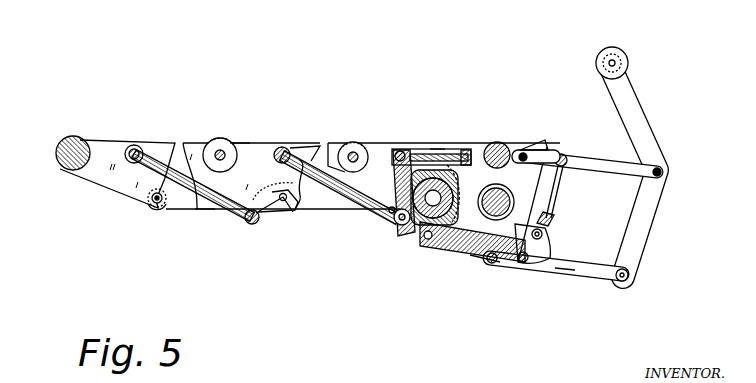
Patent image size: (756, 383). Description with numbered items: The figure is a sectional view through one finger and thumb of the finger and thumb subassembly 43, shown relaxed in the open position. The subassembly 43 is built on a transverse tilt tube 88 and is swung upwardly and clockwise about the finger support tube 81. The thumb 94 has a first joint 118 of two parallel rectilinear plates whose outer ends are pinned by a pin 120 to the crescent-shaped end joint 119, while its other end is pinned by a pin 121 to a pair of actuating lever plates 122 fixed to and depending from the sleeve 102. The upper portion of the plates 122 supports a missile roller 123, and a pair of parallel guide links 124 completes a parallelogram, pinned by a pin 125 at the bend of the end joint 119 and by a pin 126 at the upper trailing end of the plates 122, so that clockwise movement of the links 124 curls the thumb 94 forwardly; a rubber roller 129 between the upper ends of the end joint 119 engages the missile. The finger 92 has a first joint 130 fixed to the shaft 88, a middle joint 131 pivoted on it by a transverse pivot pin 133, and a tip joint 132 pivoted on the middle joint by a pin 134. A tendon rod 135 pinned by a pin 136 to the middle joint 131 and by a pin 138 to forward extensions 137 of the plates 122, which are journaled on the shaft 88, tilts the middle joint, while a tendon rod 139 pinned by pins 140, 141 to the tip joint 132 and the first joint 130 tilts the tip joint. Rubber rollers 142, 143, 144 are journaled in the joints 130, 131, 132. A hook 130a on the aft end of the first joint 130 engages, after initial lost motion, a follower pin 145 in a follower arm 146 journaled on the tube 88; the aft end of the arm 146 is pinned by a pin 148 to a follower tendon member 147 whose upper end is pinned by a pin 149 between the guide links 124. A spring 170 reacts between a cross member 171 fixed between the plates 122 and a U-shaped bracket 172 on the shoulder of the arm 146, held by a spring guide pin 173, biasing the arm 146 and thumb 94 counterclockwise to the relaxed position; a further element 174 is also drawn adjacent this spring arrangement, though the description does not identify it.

The finger and thumb subassembly 43 is at (238, 112).
The rubber roller 144 is at (63, 140).
The pin 140 is at (133, 145).
The rubber roller 143 is at (215, 139).
The pin 136 is at (283, 146).
The rubber roller 142 is at (347, 143).
The U-shaped bracket 172 is at (437, 147).
The screw 174 is at (400, 150).
The spring 170 is at (432, 150).
The cross member 171 is at (470, 146).
The spring guide pin 173 is at (476, 146).
The missile roller 123 is at (545, 140).
The pin 126 is at (523, 152).
The pin 149 is at (561, 153).
The rubber roller 129 is at (626, 48).
The second or end joint 119 is at (647, 123).
The parallel guide links 124 is at (576, 158).
The pin 125 is at (668, 170).
The sleeve 102 is at (505, 180).
The finger support tube 81 is at (510, 198).
The follower tendon member 147 is at (549, 215).
The pin 148 is at (544, 237).
The pin 120 is at (630, 279).
The first joint 118 is at (553, 268).
The thumb 94 is at (567, 283).
The actuating lever plates 122 is at (520, 262).
The pin 121 is at (483, 258).
The hook 130a is at (485, 265).
The follower arm 146 is at (431, 240).
The follower pin 145 is at (423, 244).
The pin 138 is at (392, 213).
The forward extensions 137 is at (402, 208).
The middle joint operating tendon or tension rod 135 is at (365, 212).
The pin 141 is at (258, 224).
The tendon rod 139 is at (246, 222).
The transverse pivot pin 133 is at (291, 213).
The first joint 130 is at (347, 210).
The second or middle joint 131 is at (175, 211).
The transverse pivot pin 134 is at (153, 208).
The third or tip joint 132 is at (110, 182).
The transverse tilt tube 88 is at (452, 189).
The finger 92 is at (206, 216).